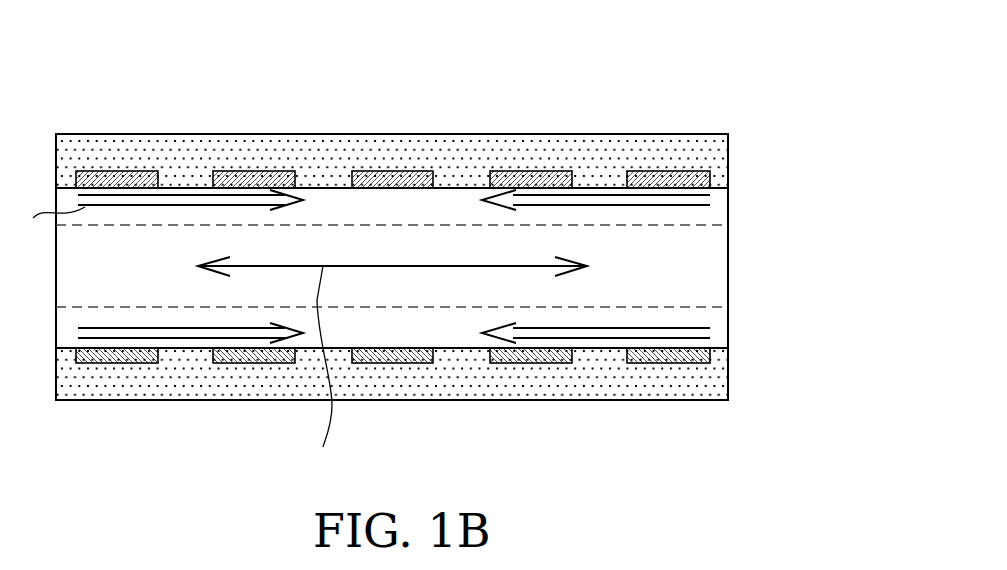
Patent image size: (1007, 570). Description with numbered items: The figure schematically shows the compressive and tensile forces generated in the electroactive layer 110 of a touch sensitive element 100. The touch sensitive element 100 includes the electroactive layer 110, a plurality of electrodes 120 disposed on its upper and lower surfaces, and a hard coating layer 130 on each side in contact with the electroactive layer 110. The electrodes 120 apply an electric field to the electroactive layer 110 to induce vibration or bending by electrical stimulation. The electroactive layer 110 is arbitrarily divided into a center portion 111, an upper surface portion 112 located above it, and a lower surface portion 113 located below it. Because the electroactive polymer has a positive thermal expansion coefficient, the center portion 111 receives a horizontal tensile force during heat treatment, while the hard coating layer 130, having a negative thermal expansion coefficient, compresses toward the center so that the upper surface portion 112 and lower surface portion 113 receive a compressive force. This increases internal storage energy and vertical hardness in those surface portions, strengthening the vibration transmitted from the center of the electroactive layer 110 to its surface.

The touch sensitive element 100 is at (733, 34).
The electroactive layer 110 is at (810, 198).
The center portion 111 is at (720, 268).
The upper surface portion 112 is at (720, 205).
The lower surface portion 113 is at (720, 328).
The electrode 120 is at (552, 179).
The hard coating layer 130 is at (707, 152).